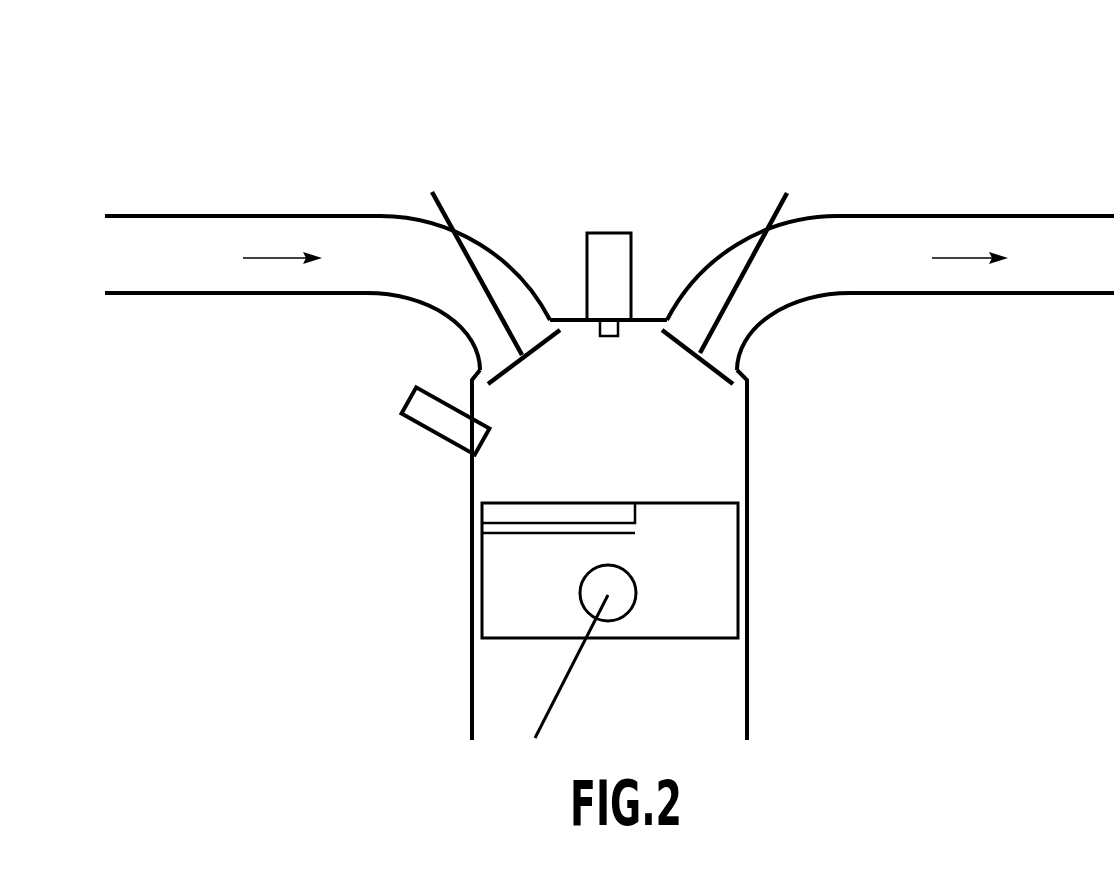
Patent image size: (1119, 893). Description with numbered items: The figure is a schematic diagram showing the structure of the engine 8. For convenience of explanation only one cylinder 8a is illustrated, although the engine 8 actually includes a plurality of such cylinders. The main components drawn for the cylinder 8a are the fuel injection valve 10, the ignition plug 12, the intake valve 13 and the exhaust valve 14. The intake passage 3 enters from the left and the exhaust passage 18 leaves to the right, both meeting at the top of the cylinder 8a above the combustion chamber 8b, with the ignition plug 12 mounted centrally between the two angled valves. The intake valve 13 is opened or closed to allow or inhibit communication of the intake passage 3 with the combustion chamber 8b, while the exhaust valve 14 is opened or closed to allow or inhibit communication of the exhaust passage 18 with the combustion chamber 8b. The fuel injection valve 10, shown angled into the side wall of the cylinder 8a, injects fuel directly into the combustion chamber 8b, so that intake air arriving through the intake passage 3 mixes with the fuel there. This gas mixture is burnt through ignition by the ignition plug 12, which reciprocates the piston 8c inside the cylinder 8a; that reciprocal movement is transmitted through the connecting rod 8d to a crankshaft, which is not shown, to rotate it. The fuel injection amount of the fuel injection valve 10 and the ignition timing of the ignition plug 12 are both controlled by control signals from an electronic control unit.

The intake passage 3 is at (200, 294).
The exhaust passage 18 is at (982, 294).
The engine 8 is at (605, 90).
The cylinder 8a is at (780, 446).
The combustion chamber 8b is at (621, 436).
The piston 8c is at (717, 577).
The connecting rod 8d is at (570, 673).
The fuel injection valve 10 is at (429, 447).
The ignition plug 12 is at (608, 238).
The intake valve 13 is at (465, 250).
The exhaust valve 14 is at (757, 240).